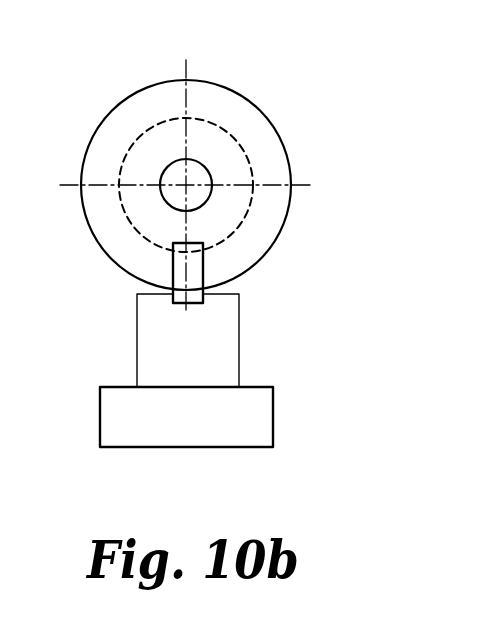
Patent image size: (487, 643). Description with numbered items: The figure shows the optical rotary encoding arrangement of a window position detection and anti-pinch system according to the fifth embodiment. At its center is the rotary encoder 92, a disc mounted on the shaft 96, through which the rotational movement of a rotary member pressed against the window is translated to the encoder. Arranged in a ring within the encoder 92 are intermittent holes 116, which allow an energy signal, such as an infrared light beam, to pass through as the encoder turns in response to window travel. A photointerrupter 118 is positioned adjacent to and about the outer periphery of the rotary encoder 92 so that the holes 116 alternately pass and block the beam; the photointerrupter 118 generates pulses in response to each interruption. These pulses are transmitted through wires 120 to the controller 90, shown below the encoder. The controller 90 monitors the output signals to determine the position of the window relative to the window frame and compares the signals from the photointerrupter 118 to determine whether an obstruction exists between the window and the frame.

The controller 90 is at (230, 448).
The rotary encoder 92 is at (97, 133).
The shaft 96 is at (205, 168).
The intermittent holes 116 is at (148, 128).
The photointerrupter 118 is at (173, 273).
The wires 120 is at (239, 328).